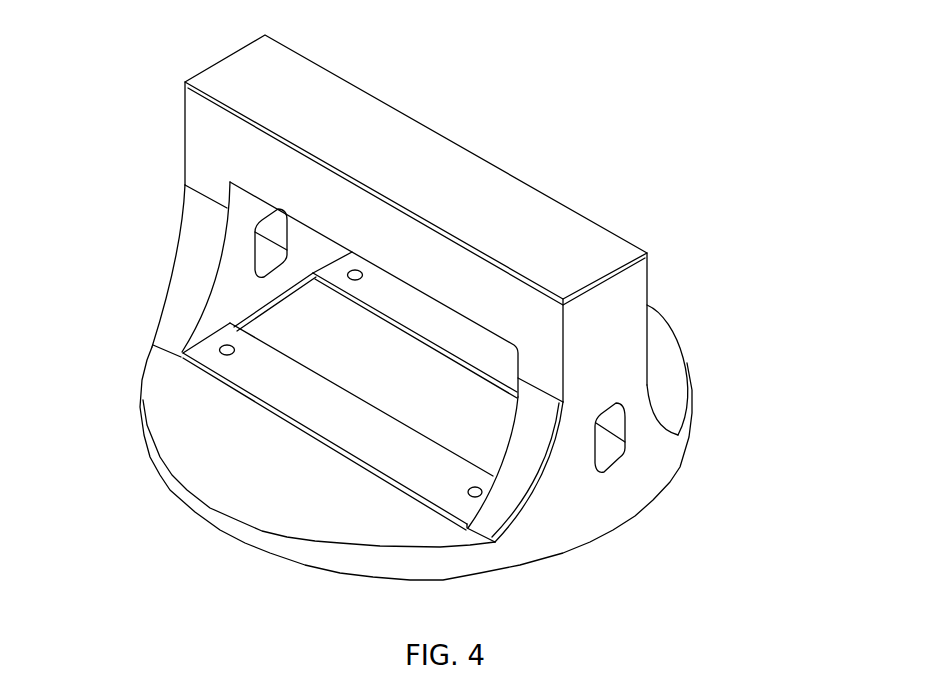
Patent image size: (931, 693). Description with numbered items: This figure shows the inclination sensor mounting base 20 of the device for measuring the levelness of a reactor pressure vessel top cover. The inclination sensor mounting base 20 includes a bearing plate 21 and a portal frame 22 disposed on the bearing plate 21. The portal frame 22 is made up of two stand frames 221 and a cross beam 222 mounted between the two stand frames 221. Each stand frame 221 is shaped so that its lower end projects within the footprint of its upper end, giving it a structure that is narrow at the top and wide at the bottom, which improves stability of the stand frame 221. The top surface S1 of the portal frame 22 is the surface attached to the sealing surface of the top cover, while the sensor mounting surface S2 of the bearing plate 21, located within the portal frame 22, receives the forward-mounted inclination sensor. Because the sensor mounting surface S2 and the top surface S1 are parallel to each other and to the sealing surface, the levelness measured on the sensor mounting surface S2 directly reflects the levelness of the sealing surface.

The inclination sensor mounting base 20 is at (845, 333).
The bearing plate 21 is at (670, 388).
The portal frame 22 is at (792, 303).
The stand frame 221 is at (613, 342).
The cross beam 222 is at (572, 240).
The top surface S1 is at (422, 147).
The sensor mounting surface S2 is at (320, 393).